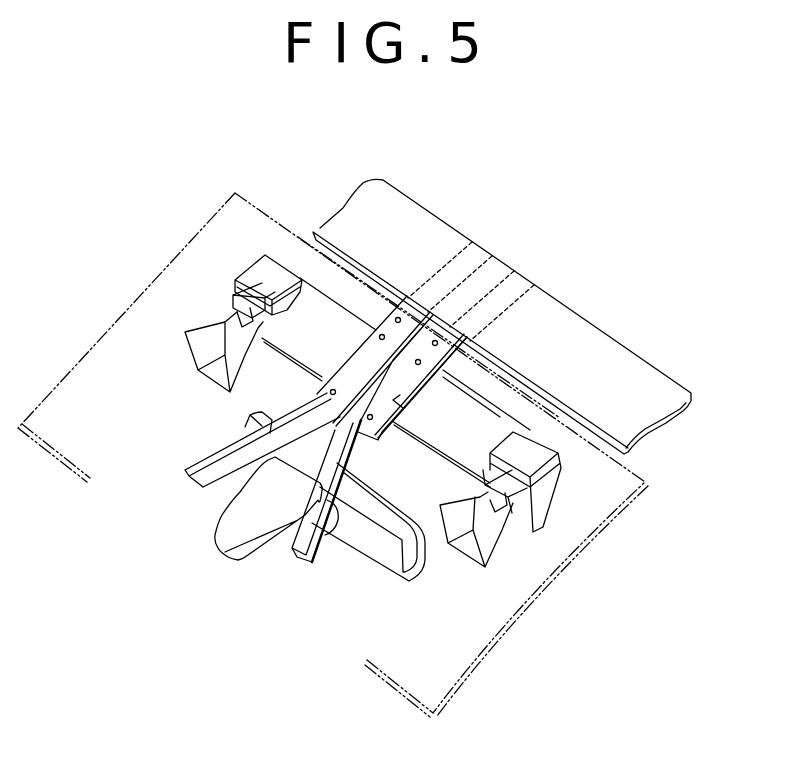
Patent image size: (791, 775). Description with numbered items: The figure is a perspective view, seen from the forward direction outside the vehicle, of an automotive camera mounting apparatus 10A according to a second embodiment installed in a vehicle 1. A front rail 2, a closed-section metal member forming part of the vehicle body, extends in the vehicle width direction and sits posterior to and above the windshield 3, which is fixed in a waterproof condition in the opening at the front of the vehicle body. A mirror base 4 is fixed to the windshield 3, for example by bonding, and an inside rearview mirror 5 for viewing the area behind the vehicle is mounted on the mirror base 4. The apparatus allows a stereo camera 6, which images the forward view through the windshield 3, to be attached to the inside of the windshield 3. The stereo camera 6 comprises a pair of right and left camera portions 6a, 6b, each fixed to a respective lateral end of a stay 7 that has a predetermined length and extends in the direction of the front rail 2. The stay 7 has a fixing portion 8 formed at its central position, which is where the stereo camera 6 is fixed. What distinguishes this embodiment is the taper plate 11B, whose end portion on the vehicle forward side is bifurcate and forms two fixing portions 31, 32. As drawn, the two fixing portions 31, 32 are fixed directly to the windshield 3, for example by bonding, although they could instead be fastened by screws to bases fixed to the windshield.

The vehicle 1 is at (600, 207).
The front rail 2 is at (600, 347).
The windshield 3 is at (490, 622).
The mirror base 4 is at (227, 543).
The inside rearview mirror 5 is at (378, 552).
The stereo camera 6 is at (175, 315).
The camera portion 6a is at (188, 343).
The camera portion 6b is at (490, 552).
The stay 7 is at (329, 317).
The fixing portion 8 is at (447, 367).
The automotive camera mounting apparatus 10A is at (375, 316).
The taper plate 11B is at (225, 463).
The fixing portion 31 is at (190, 483).
The fixing portion 32 is at (297, 560).